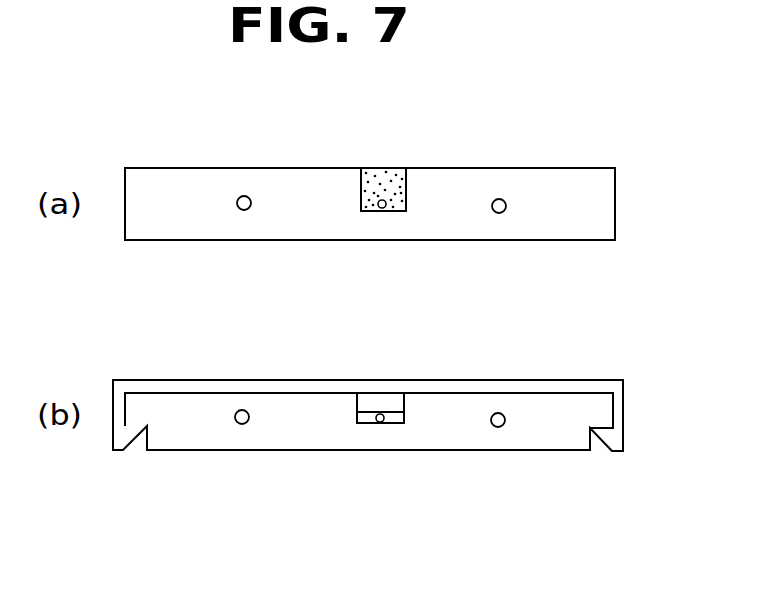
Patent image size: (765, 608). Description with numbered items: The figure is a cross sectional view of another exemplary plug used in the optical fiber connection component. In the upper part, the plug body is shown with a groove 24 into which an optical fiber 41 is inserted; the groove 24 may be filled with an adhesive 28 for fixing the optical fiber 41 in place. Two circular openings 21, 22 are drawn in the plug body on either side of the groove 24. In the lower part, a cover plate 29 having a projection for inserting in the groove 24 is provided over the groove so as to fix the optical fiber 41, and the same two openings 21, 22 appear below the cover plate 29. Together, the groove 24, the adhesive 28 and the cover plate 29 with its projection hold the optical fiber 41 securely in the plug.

The first through hole 21 is at (244, 196).
The second through hole 22 is at (501, 199).
The groove 24 is at (360, 188).
The adhesive 28 is at (387, 168).
The cover plate 29 is at (273, 383).
The optical fiber 41 is at (382, 208).